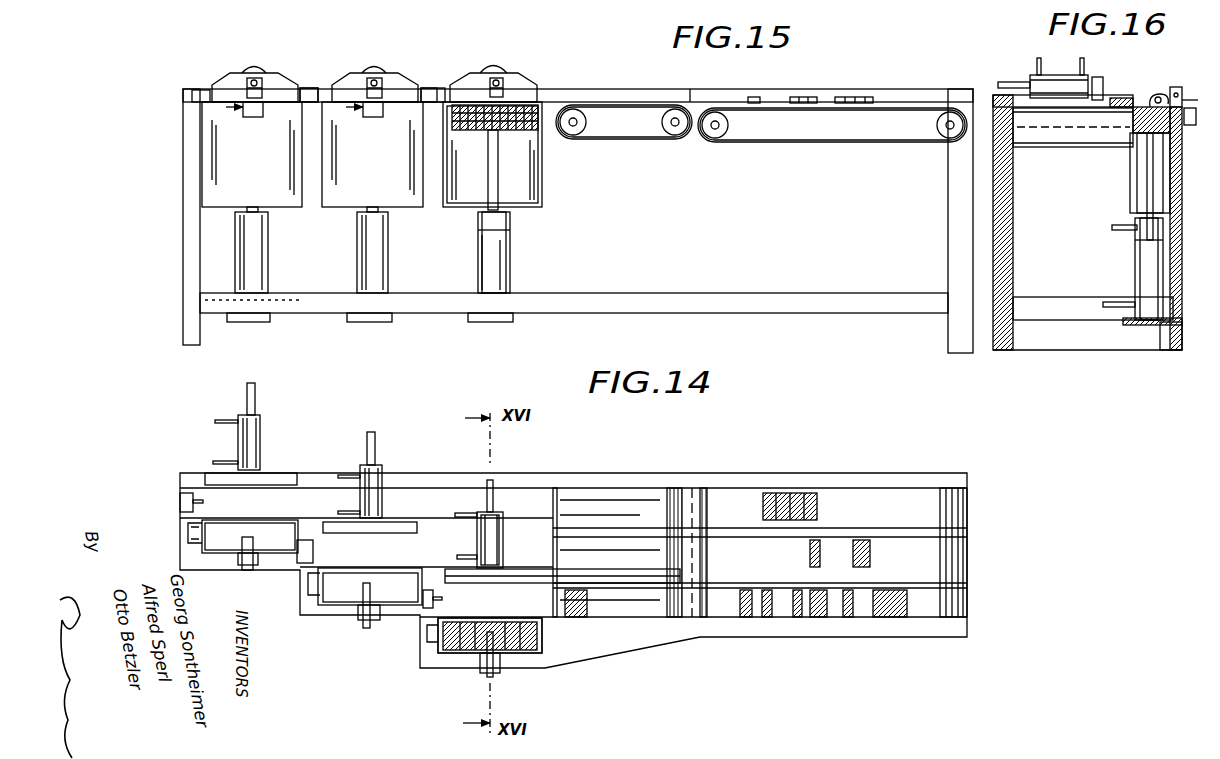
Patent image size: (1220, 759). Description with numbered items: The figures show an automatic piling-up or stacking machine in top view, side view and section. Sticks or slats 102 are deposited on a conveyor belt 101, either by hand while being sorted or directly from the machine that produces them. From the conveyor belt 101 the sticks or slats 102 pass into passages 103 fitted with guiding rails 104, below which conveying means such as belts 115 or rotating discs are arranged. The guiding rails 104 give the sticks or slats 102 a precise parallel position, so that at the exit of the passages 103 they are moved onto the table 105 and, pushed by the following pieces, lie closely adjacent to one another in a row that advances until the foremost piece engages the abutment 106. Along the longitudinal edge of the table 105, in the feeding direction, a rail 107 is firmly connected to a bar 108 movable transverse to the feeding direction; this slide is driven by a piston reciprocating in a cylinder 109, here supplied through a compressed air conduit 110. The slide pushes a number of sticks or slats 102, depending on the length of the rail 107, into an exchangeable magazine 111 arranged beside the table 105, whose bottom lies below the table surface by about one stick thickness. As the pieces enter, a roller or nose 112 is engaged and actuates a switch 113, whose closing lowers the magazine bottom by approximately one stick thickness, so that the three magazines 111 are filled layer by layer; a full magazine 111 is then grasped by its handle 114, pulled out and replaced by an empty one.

In FIG. 15, the conveyor belt 101 is at (806, 144).
In FIG. 14, the conveyor belt 101 is at (964, 550).
In FIG. 15, the sticks or slats 102 is at (841, 97).
In FIG. 16, the sticks or slats 102 is at (1123, 98).
In FIG. 14, the sticks or slats 102 is at (880, 618).
In FIG. 14, the passages 103 is at (658, 513).
In FIG. 15, the guiding rails 104 is at (628, 91).
In FIG. 16, the guiding rails 104 is at (996, 93).
In FIG. 14, the guiding rails 104 is at (539, 487).
In FIG. 15, the table 105 is at (521, 100).
In FIG. 14, the table 105 is at (540, 608).
In FIG. 15, the abutment 106 is at (427, 89).
In FIG. 14, the abutment 106 is at (184, 502).
In FIG. 15, the rail 107 is at (345, 82).
In FIG. 16, the rail 107 is at (1099, 78).
In FIG. 14, the rail 107 is at (458, 571).
In FIG. 15, the bar 108 is at (482, 78).
In FIG. 16, the bar 108 is at (1012, 82).
In FIG. 14, the bar 108 is at (247, 396).
In FIG. 15, the cylinder 109 is at (503, 76).
In FIG. 16, the cylinder 109 is at (1061, 70).
In FIG. 14, the cylinder 109 is at (261, 436).
In FIG. 14, the compressed air conduit 110 is at (462, 555).
In FIG. 15, the exchangeable magazine 111 is at (546, 168).
In FIG. 16, the exchangeable magazine 111 is at (1130, 190).
In FIG. 14, the exchangeable magazine 111 is at (232, 521).
In FIG. 16, the roller or nose 112 is at (1165, 93).
In FIG. 14, the roller or nose 112 is at (365, 590).
In FIG. 15, the switch 113 is at (383, 110).
In FIG. 16, the switch 113 is at (1192, 97).
In FIG. 14, the switch 113 is at (484, 672).
In FIG. 14, the handle 114 is at (188, 535).
In FIG. 15, the belts 115 is at (648, 140).
In FIG. 16, the belts 115 is at (1056, 147).
In FIG. 14, the belts 115 is at (603, 502).